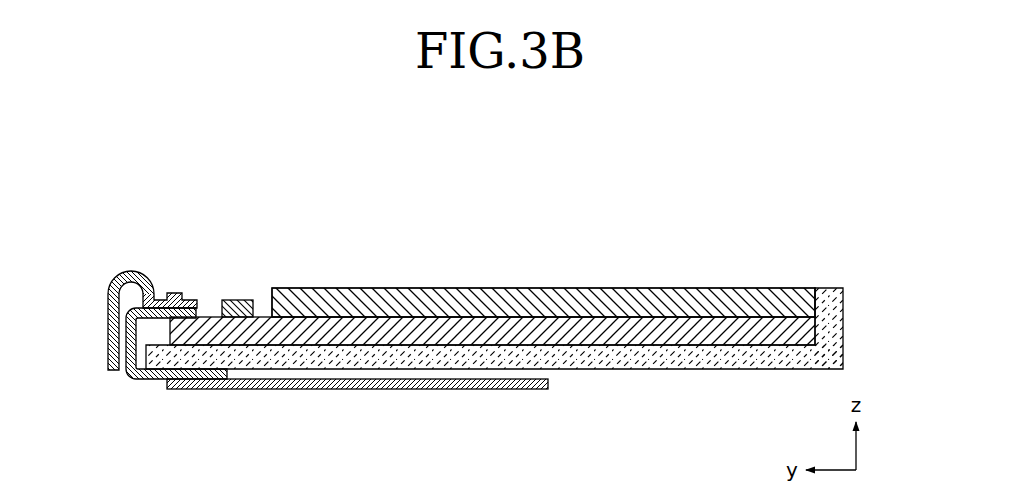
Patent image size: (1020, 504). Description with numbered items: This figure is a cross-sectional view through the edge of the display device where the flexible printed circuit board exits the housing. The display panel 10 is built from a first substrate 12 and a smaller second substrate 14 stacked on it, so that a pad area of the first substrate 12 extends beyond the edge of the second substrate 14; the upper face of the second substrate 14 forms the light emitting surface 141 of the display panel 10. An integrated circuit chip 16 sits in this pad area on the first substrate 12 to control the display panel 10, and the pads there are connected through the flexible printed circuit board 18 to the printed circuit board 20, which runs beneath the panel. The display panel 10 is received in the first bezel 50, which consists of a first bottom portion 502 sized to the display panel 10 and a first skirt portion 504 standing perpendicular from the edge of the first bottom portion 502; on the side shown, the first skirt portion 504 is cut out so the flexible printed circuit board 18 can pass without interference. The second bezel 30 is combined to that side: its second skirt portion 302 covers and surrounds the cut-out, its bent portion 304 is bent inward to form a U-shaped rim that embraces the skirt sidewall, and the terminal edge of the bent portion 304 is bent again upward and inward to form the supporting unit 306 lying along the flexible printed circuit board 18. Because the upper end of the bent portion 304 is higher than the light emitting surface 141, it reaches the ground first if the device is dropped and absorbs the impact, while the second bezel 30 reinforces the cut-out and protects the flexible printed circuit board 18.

The display panel 10 is at (492, 261).
The first substrate 12 is at (624, 330).
The second substrate 14 is at (543, 265).
The light emitting surface 141 is at (447, 288).
The integrated circuit chip 16 is at (237, 300).
The flexible printed circuit board 18 is at (155, 379).
The printed circuit board 20 is at (274, 389).
The second bezel 30 is at (141, 308).
The second skirt portion 302 is at (107, 338).
The bent portion 304 is at (143, 271).
The supporting unit 306 is at (172, 293).
The first bezel 50 is at (525, 333).
The first bottom portion 502 is at (724, 344).
The first skirt portion 504 is at (830, 295).